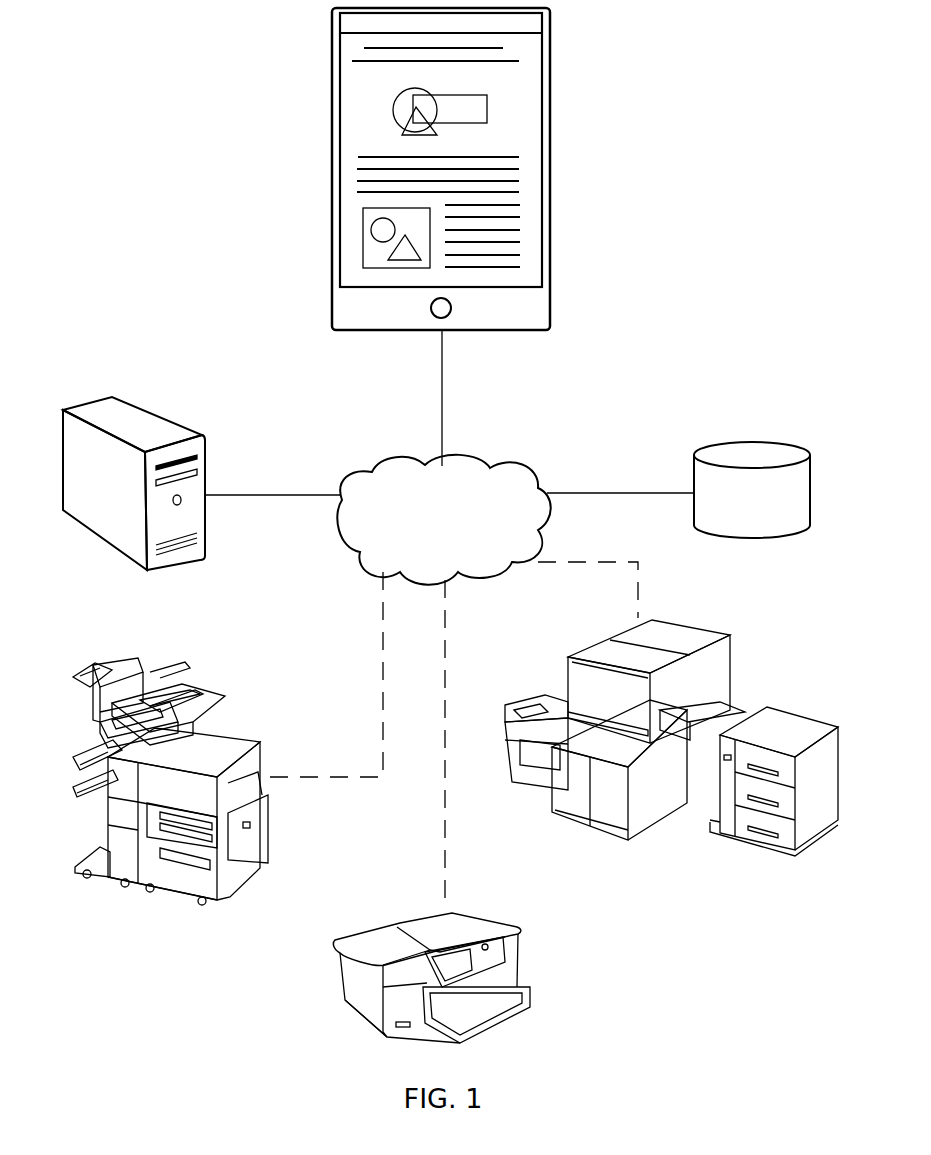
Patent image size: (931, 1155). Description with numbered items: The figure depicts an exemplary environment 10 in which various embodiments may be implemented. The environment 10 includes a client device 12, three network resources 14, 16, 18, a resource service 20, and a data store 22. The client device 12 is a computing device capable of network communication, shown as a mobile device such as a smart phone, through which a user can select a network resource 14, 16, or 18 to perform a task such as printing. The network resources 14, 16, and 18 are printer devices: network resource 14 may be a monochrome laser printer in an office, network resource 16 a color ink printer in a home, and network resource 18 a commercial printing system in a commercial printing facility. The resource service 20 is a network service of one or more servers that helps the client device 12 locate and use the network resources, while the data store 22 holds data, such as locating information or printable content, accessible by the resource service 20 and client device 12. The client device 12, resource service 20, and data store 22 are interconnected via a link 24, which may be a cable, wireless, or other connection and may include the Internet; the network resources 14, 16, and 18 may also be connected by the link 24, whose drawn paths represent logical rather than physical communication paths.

The environment 10 is at (127, 80).
The client device 12 is at (385, 331).
The network resource 14 is at (200, 693).
The network resource 16 is at (522, 936).
The network resource 18 is at (775, 718).
The resource service 20 is at (153, 418).
The data store 22 is at (782, 450).
The link 24 is at (493, 456).